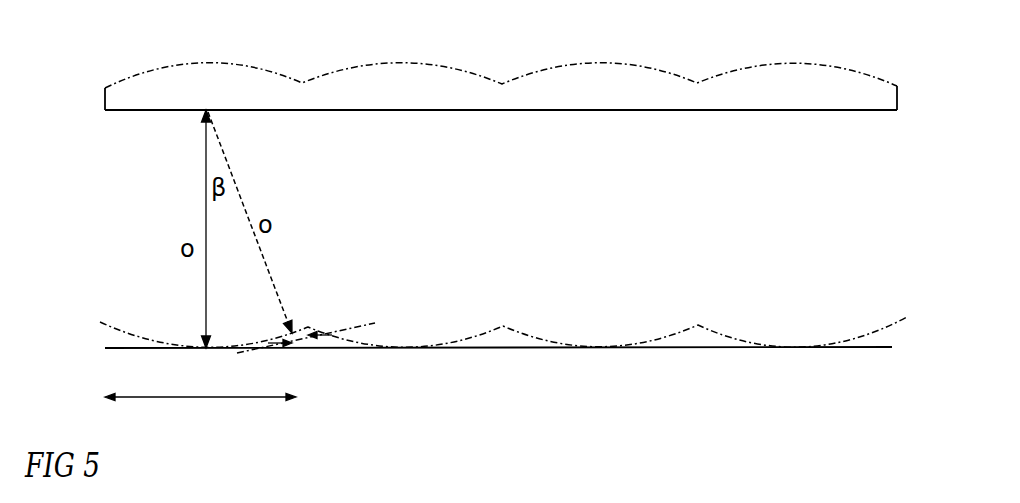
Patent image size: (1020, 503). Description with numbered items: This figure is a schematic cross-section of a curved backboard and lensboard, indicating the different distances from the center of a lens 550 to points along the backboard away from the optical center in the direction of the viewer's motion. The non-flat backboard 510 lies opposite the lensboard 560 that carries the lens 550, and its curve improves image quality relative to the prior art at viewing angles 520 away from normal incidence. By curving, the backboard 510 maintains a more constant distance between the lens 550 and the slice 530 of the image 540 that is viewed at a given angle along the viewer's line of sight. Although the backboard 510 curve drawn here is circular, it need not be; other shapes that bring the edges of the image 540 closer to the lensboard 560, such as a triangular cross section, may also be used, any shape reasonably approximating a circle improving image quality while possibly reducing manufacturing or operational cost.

The backboard 510 is at (477, 341).
The viewing angle 520 is at (250, 222).
The slice 530 is at (306, 351).
The image 540 is at (200, 414).
The lens 550 is at (501, 58).
The lensboard 560 is at (472, 102).